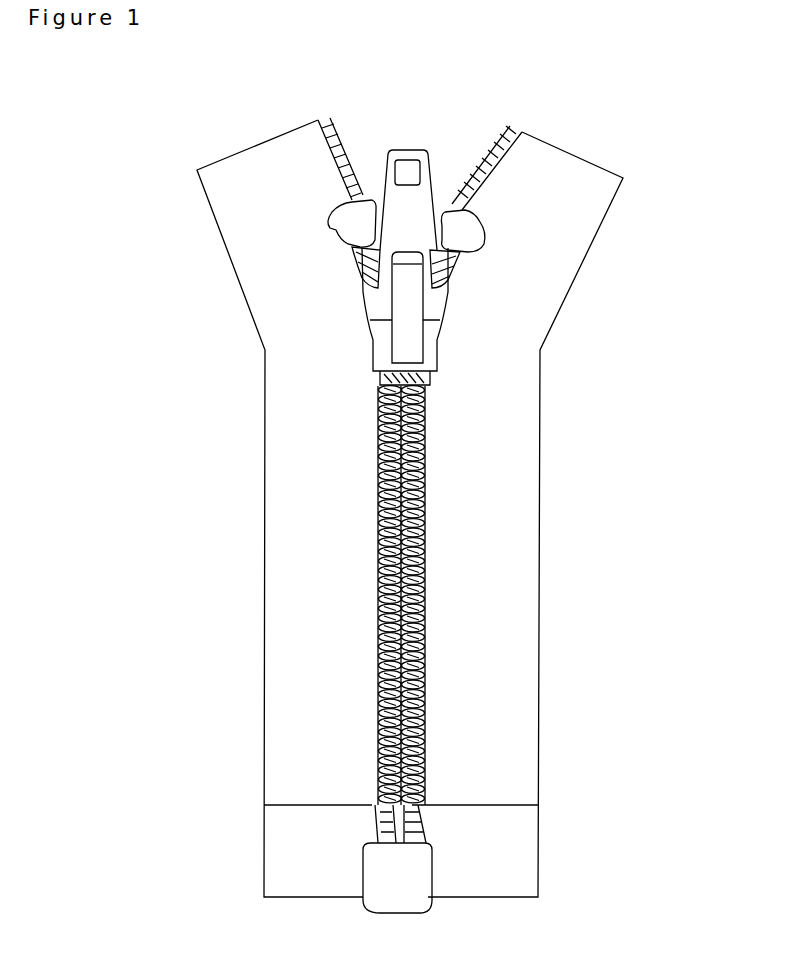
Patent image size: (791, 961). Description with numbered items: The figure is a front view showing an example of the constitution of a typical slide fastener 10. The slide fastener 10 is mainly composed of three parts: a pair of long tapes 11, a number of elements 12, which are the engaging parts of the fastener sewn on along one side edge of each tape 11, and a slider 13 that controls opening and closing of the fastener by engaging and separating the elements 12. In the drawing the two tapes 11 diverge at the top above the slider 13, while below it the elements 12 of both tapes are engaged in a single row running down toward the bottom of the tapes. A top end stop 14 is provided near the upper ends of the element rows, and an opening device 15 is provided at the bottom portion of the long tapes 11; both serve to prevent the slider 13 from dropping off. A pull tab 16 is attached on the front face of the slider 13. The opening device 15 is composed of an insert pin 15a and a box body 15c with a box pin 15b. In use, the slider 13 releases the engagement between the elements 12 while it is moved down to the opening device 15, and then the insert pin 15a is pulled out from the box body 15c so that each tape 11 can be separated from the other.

The slide fastener 10 is at (235, 389).
The long tapes 11 is at (263, 520).
The elements 12 is at (383, 583).
The slider 13 is at (440, 340).
The top end stop 14 is at (482, 227).
The opening device 15 is at (683, 783).
The insert pin 15a is at (387, 819).
The box pin 15b is at (413, 833).
The box body 15c is at (425, 874).
The pull tab 16 is at (410, 151).